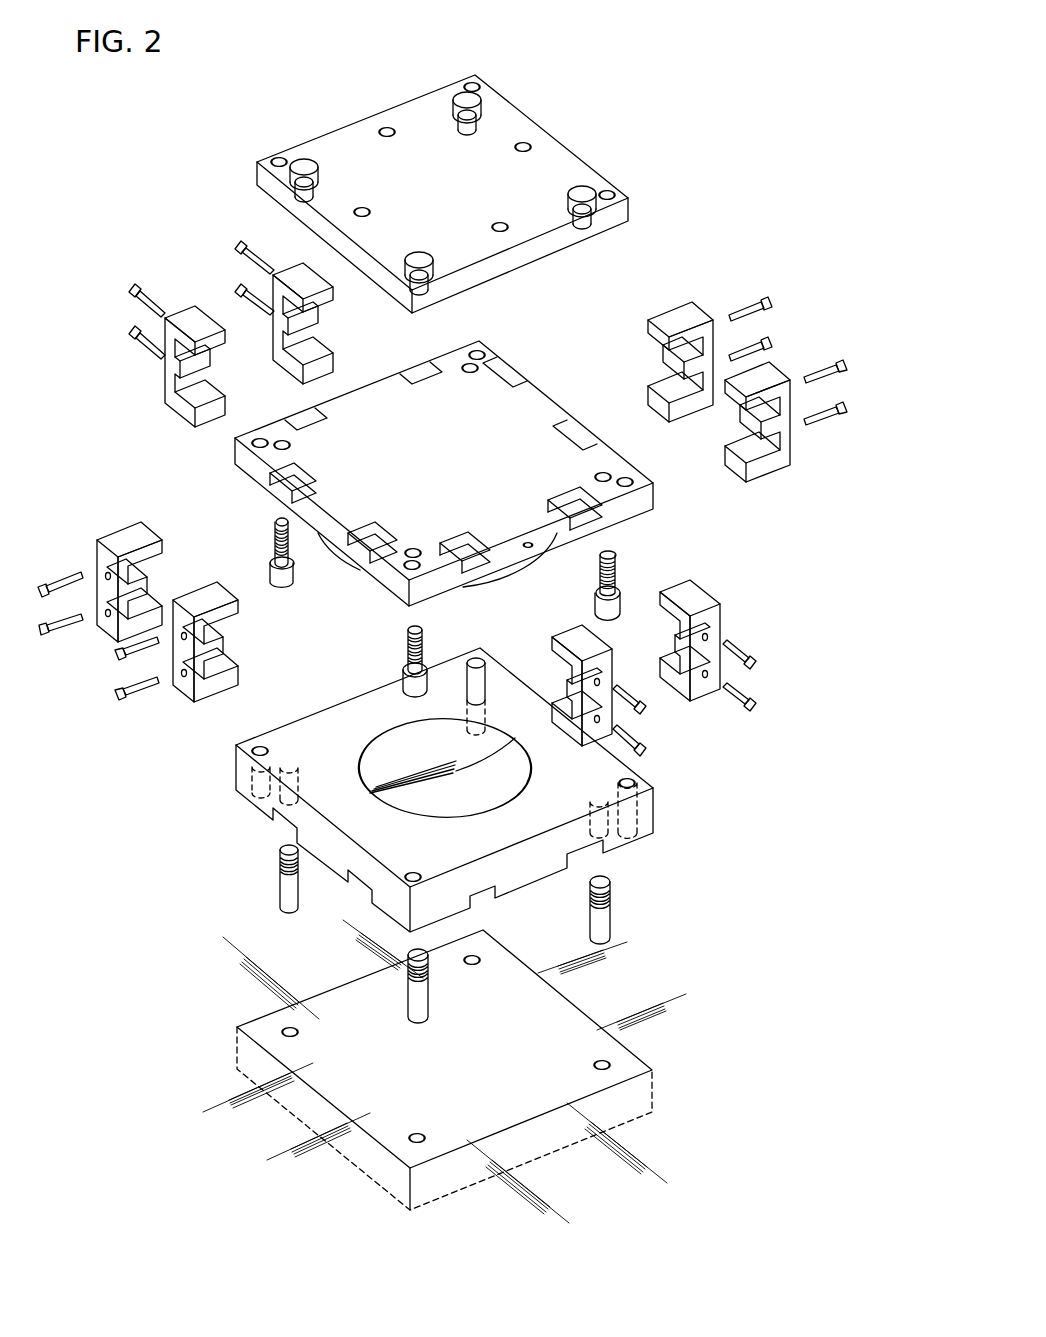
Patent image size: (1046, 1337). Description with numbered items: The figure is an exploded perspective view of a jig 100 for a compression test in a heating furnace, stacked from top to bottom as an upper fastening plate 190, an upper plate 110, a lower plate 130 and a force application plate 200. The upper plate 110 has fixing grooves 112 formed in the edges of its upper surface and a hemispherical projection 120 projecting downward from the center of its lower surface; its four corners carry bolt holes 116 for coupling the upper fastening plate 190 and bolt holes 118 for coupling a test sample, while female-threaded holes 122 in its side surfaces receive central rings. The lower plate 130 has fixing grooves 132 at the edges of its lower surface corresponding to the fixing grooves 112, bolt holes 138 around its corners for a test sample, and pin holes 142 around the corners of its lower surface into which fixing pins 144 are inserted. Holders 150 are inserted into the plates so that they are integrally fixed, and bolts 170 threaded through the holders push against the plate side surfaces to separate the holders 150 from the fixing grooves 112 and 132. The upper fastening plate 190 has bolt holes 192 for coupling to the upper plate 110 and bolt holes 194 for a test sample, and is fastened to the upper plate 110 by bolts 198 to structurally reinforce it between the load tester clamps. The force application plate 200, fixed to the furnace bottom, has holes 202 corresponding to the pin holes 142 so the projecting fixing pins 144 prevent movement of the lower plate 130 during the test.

The jig 100 is at (674, 100).
The upper plate 110 is at (655, 536).
The fixing grooves 112 is at (588, 443).
The bolt holes 116 is at (479, 350).
The bolt holes 118 is at (467, 365).
The hemispherical projection 120 is at (514, 580).
The female-threaded holes 122 is at (531, 550).
The lower plate 130 is at (653, 854).
The fixing grooves 132 is at (580, 855).
The bolt holes 138 is at (261, 750).
The pin holes 142 is at (278, 828).
The fixing pins 144 is at (281, 880).
The holders 150 is at (736, 378).
The bolts 170 is at (815, 370).
The upper fastening plate 190 is at (512, 125).
The bolt holes 192 is at (460, 98).
The bolt holes 194 is at (471, 85).
The bolts 198 is at (290, 578).
The force application plate 200 is at (375, 1085).
The holes 202 is at (288, 1030).